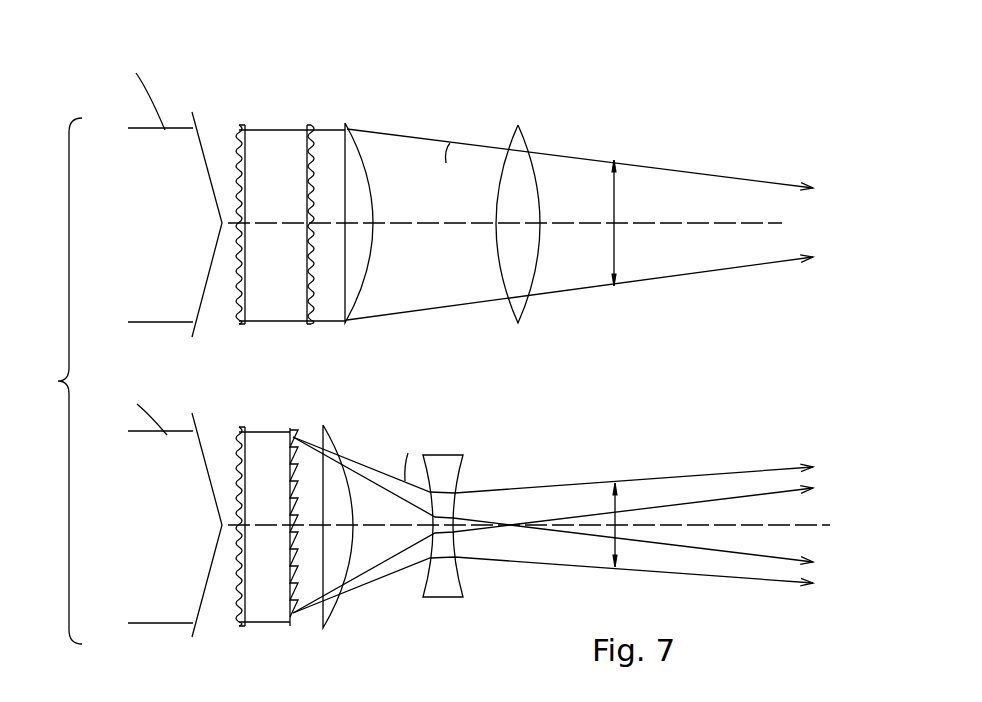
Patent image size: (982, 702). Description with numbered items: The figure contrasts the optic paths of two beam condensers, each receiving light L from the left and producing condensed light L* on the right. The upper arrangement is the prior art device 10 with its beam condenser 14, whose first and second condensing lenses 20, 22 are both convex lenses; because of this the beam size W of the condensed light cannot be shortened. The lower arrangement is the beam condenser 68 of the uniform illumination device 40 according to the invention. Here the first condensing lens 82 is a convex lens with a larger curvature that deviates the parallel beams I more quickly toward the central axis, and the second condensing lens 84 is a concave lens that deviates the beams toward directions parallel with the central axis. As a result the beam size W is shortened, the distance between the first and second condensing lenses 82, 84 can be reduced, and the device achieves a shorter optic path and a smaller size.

The optical system (first embodiment) 10 is at (637, 67).
The prior art beam condenser 14 is at (467, 88).
The first condensing lens 20 is at (346, 127).
The second condensing lens 22 is at (526, 137).
The uniform illumination device 40 is at (638, 363).
The beam condenser 68 is at (435, 403).
The first condensing lens 82 is at (335, 437).
The second condensing lens 84 is at (443, 462).